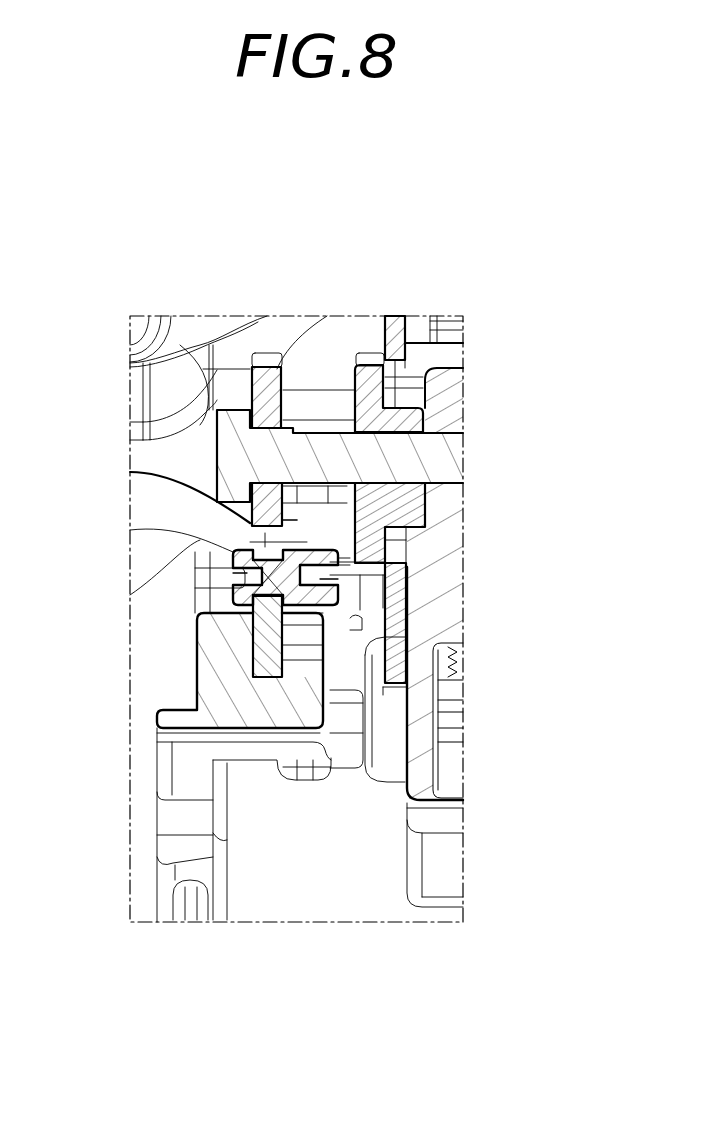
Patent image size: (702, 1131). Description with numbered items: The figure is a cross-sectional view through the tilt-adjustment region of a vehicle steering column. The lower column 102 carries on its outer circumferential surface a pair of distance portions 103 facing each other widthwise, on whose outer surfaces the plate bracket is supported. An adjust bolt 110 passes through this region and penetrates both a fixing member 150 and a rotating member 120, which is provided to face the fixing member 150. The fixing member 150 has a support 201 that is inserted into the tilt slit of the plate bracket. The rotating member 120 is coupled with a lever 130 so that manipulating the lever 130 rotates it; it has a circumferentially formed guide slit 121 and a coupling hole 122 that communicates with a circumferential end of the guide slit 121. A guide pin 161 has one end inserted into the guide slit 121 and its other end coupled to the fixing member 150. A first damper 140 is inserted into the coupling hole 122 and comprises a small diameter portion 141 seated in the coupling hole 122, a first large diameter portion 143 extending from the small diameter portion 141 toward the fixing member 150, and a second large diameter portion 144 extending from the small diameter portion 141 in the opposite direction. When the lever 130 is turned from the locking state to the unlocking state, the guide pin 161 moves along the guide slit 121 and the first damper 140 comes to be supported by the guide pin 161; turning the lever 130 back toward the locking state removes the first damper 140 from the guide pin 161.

The lower column 102 is at (457, 604).
The distance portions 103 is at (457, 415).
The adjust bolt 110 is at (457, 461).
The rotating member 120 is at (270, 347).
The guide slit 121 is at (250, 542).
The coupling hole 122 is at (347, 560).
The lever 130 is at (183, 833).
The first damper 140 is at (212, 551).
The small diameter portion 141 is at (347, 561).
The first large diameter portion 143 is at (320, 579).
The second large diameter portion 144 is at (245, 572).
The fixing member 150 is at (375, 345).
The guide pin 161 is at (297, 520).
The support 201 is at (407, 418).